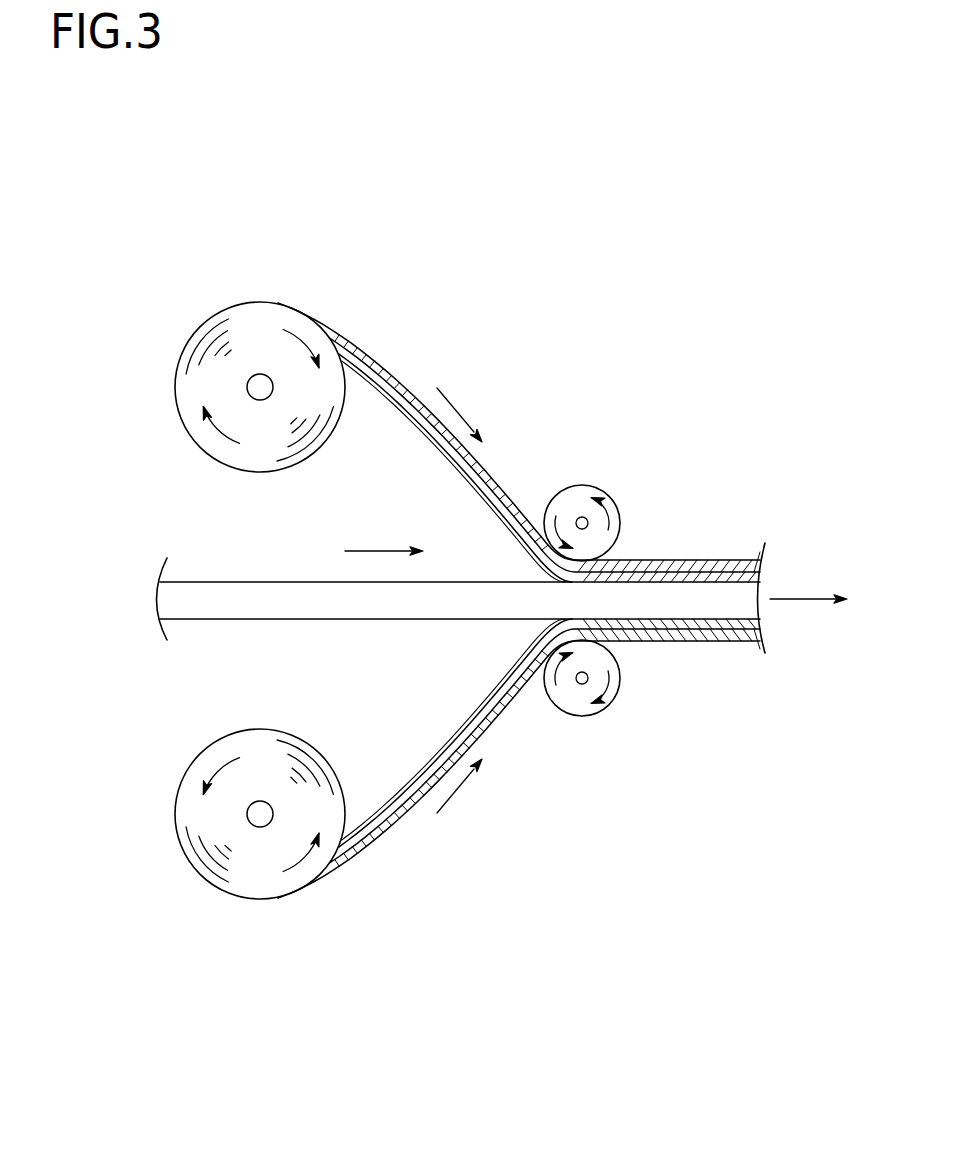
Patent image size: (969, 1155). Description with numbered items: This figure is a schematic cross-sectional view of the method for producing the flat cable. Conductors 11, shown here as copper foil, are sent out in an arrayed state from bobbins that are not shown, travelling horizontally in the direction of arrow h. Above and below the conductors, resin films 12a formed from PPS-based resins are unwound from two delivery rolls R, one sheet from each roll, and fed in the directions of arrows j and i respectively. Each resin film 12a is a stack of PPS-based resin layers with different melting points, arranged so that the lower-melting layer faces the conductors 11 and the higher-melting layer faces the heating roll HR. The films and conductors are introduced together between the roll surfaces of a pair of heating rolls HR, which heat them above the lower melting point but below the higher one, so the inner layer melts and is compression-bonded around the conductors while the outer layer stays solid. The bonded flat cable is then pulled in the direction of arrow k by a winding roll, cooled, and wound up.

The conductor 11 is at (220, 608).
The resin film 12a is at (378, 350).
The delivery roll R is at (264, 310).
The heating roll HR is at (573, 495).
The arrow h is at (384, 536).
The arrow j is at (455, 405).
The arrow i is at (452, 795).
The arrow k is at (797, 597).